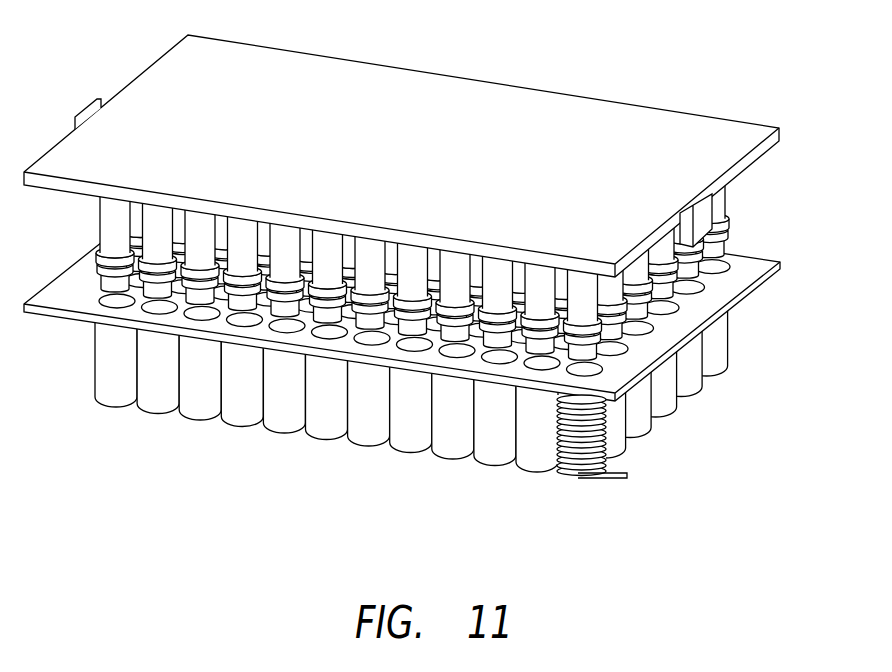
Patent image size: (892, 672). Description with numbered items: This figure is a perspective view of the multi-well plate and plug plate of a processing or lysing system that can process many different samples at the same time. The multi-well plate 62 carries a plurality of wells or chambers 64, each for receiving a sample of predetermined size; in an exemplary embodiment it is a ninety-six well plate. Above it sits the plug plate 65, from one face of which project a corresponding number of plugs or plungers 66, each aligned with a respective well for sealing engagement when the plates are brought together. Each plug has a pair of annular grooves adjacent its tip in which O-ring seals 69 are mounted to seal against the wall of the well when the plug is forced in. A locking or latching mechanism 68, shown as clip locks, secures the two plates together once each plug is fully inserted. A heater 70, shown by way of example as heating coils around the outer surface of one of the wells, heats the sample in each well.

The multi-well plate 62 is at (56, 299).
The wells or chambers 64 is at (155, 402).
The plug plate 65 is at (392, 99).
The plugs or plungers 66 is at (670, 257).
The locking or latching mechanism 68 is at (702, 204).
The O-ring seals 69 is at (99, 252).
The heater 70 is at (572, 473).